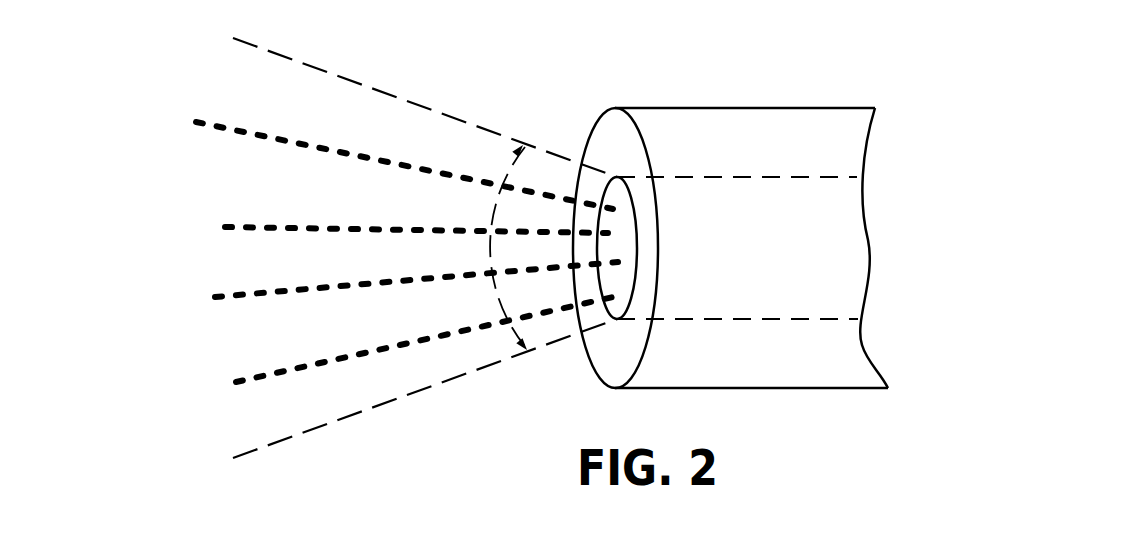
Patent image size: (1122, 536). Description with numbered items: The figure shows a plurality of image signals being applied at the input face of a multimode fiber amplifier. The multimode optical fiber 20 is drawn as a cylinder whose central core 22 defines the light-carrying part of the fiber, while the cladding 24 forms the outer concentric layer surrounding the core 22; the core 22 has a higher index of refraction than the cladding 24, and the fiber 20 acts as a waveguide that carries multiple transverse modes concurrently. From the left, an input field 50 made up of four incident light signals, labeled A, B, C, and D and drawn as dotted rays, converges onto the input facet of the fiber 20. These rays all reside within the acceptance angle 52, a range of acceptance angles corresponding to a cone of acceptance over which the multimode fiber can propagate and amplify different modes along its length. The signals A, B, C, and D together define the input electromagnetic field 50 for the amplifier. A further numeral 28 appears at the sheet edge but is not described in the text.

The multimode optical fiber 20 is at (758, 108).
The core 22 is at (750, 177).
The cladding 24 is at (615, 127).
The element 28 is at (522, 534).
The input field 50 is at (167, 87).
The acceptance angle 52 is at (492, 213).